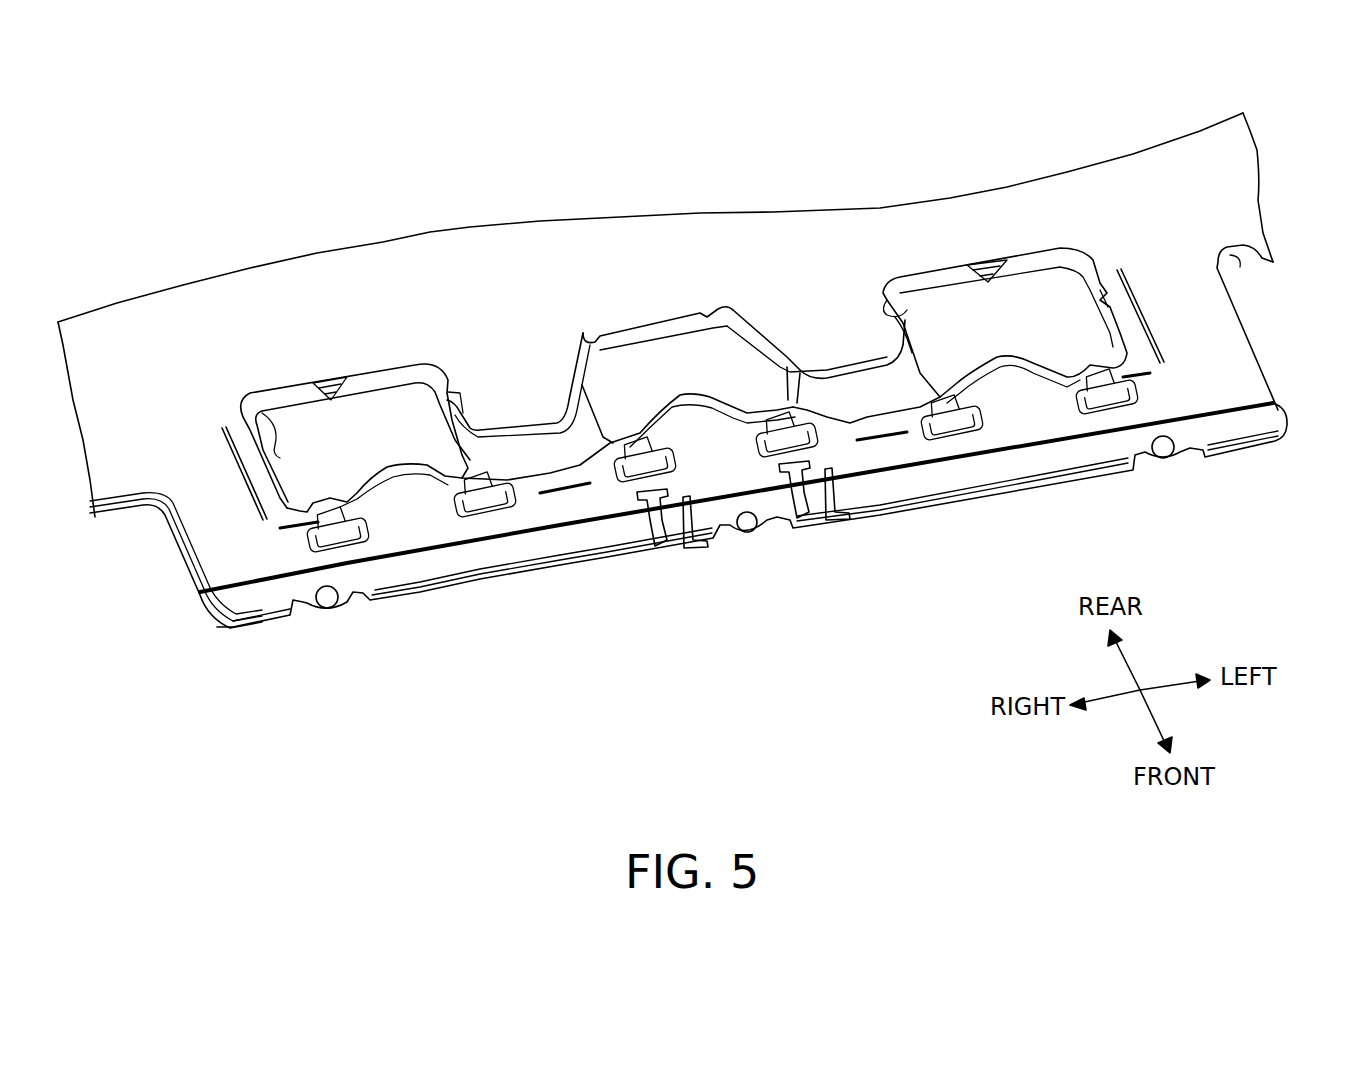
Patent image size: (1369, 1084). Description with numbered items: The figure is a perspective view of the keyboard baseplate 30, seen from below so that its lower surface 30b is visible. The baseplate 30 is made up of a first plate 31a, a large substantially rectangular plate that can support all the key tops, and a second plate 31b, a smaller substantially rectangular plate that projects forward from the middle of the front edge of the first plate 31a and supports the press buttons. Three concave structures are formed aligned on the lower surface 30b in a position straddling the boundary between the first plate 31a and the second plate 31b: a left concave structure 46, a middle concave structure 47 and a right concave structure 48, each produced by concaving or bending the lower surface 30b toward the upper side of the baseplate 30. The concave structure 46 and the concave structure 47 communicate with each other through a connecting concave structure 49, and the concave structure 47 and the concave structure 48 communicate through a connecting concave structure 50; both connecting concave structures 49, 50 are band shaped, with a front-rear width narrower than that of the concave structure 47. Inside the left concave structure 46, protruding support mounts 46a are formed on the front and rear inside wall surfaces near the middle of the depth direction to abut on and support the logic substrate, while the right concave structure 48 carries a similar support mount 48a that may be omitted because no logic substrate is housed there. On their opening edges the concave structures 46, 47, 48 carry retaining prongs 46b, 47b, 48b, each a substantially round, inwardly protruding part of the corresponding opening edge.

The baseplate 30 is at (700, 397).
The lower surface 30b is at (120, 500).
The first plate 31a is at (430, 257).
The second plate 31b is at (260, 597).
The left concave structure 46 is at (1100, 341).
The support mount 46a is at (983, 262).
The retaining prong 46b is at (917, 300).
The concave structure 47 is at (744, 388).
The retaining prong 47b is at (710, 317).
The right concave structure 48 is at (406, 486).
The support mount 48a is at (337, 380).
The retaining prong 48b is at (273, 412).
The connecting concave structure 49 is at (867, 403).
The connecting concave structure 50 is at (552, 463).